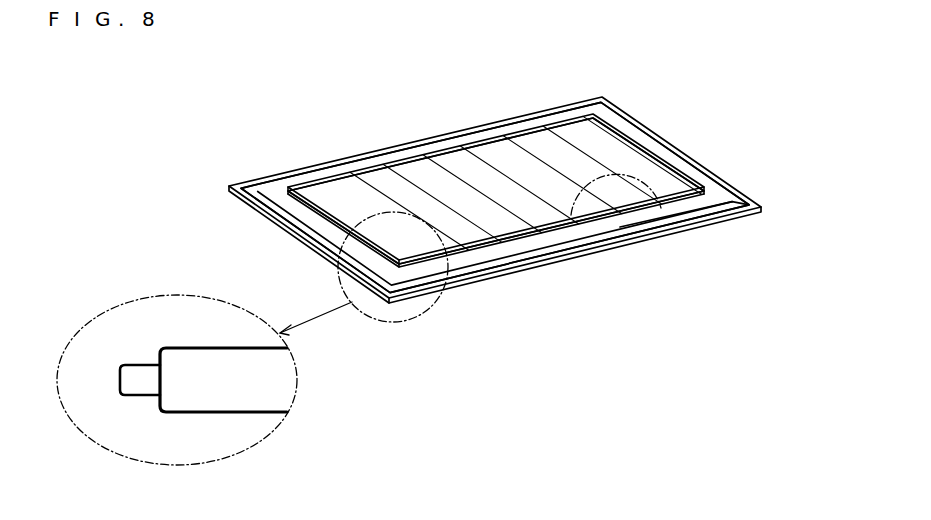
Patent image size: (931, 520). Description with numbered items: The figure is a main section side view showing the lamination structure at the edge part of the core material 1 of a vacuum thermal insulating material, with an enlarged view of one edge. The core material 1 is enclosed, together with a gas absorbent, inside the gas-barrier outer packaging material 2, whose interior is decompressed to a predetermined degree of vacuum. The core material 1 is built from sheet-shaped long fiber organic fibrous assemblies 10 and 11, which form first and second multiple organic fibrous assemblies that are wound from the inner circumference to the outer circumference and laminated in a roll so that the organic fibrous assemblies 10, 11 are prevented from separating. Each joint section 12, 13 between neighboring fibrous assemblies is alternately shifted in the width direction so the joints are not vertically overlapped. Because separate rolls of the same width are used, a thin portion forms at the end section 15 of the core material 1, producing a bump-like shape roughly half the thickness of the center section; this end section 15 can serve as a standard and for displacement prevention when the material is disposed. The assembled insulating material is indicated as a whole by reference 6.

The core material 1 is at (509, 163).
The outer packaging material 2 is at (681, 155).
The battery module 6 is at (652, 113).
The organic fibrous assembly 10 is at (336, 193).
The organic fibrous assembly 11 is at (496, 178).
The joint section 12 is at (580, 193).
The joint section 13 is at (665, 231).
The end section 15 is at (284, 212).